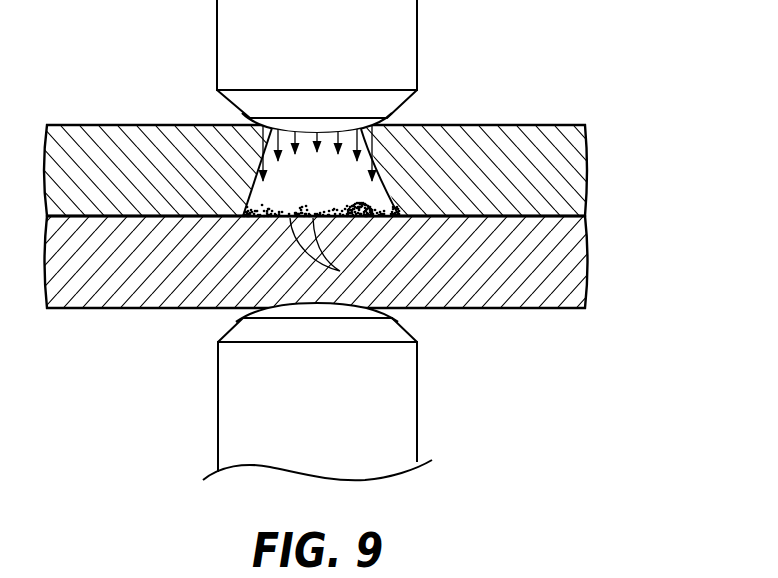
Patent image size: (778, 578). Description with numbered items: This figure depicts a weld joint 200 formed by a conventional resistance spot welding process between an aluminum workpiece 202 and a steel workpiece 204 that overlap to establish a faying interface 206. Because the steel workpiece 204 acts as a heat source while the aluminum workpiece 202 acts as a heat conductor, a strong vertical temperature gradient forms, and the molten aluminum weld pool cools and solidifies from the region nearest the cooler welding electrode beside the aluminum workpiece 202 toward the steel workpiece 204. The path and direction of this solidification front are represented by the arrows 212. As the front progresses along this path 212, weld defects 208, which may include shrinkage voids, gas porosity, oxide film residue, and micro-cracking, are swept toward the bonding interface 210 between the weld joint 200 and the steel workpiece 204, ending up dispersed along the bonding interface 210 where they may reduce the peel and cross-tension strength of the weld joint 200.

The weld joint 200 is at (398, 199).
The aluminum workpiece 202 is at (565, 175).
The steel workpiece 204 is at (568, 265).
The faying interface 206 is at (163, 207).
The weld defects 208 is at (330, 269).
The bonding interface 210 is at (378, 215).
The arrows 212 is at (258, 145).